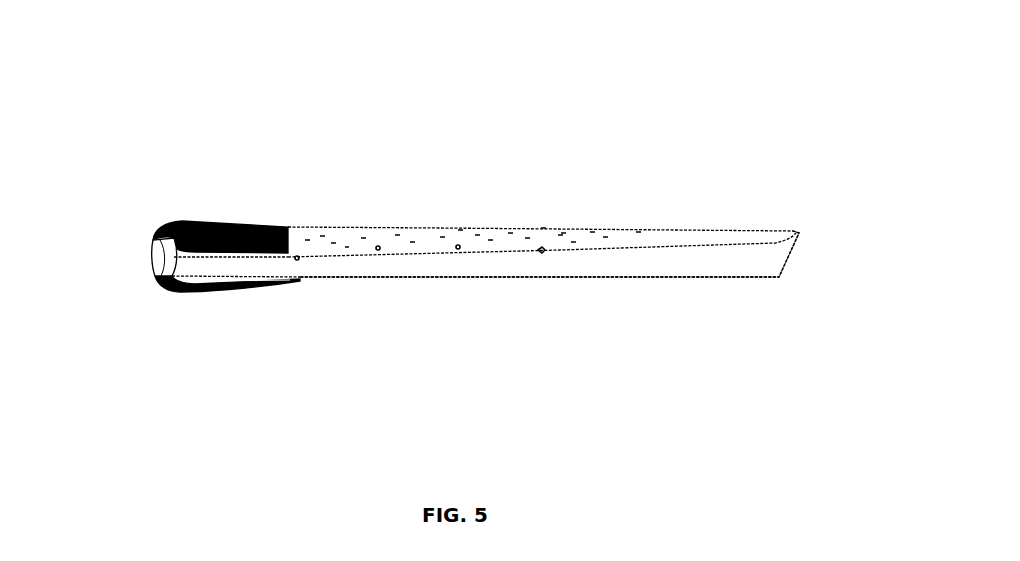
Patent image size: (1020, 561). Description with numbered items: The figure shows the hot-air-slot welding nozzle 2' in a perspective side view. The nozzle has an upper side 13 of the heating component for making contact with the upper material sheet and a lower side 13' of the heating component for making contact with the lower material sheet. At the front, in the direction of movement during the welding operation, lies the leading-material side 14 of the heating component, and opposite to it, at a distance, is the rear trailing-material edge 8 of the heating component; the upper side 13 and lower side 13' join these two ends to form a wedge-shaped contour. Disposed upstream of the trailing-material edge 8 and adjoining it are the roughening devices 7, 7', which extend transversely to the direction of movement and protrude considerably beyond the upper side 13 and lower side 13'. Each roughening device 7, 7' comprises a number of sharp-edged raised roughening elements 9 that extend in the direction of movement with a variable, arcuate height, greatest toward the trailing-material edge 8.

The hot-air-slot welding nozzle 2' is at (543, 151).
The roughening device 7 is at (220, 172).
The roughening device 7' is at (227, 338).
The trailing-material edge of the heating component 8 is at (119, 258).
The roughening elements 9 is at (259, 226).
The upper side of the heating component 13 is at (542, 182).
The lower side of the heating component 13' is at (539, 327).
The leading-material side of the heating component 14 is at (805, 256).